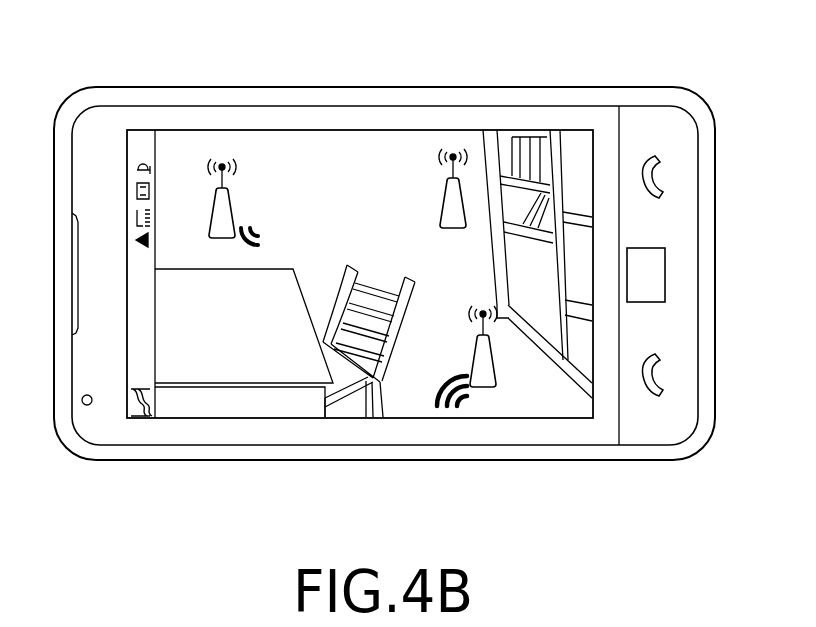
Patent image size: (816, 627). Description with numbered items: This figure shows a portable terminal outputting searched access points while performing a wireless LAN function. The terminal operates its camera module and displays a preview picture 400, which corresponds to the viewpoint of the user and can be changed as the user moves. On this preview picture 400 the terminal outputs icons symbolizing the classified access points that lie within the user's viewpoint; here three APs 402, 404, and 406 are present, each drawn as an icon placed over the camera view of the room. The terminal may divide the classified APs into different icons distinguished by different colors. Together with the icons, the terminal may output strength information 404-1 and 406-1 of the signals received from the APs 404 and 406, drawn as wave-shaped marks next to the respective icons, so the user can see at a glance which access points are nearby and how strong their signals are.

The preview picture 400 is at (578, 130).
The AP 402 is at (452, 150).
The AP 404 is at (208, 160).
The strength information 404-1 is at (258, 228).
The AP 406 is at (484, 387).
The strength information 406-1 is at (448, 407).